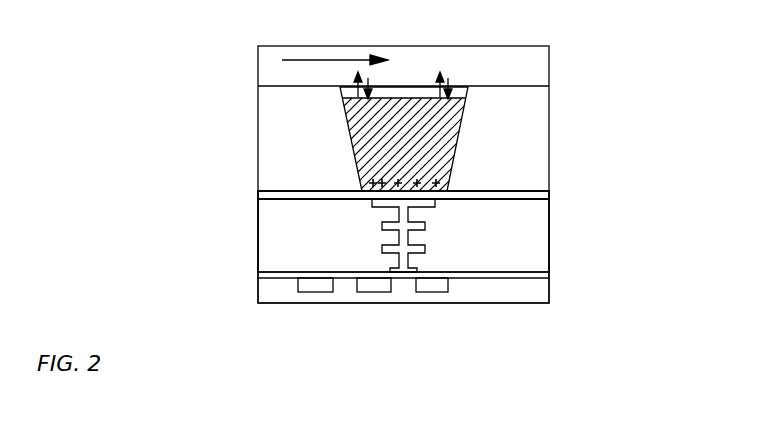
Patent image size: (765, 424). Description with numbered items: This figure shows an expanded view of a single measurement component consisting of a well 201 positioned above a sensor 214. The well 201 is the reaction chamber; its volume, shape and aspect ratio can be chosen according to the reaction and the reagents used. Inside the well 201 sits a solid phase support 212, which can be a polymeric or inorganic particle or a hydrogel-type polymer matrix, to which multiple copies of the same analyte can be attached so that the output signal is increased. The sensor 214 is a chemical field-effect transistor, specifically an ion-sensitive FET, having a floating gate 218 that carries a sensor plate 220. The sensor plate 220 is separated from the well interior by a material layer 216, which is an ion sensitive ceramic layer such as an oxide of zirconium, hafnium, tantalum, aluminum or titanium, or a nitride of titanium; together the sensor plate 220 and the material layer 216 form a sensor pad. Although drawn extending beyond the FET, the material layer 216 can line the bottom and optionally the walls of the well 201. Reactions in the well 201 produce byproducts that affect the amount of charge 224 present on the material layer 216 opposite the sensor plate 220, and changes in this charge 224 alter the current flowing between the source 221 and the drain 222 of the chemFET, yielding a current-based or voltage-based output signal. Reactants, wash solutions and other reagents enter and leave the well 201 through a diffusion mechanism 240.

The well 201 is at (353, 113).
The solid phase support 212 is at (370, 143).
The sensor 214 is at (556, 191).
The material layer 216 is at (257, 193).
The floating gate 218 is at (352, 203).
The sensor plate 220 is at (430, 202).
The source 221 is at (436, 292).
The drain 222 is at (371, 292).
The charge 224 is at (365, 183).
The diffusion mechanism 240 is at (448, 82).